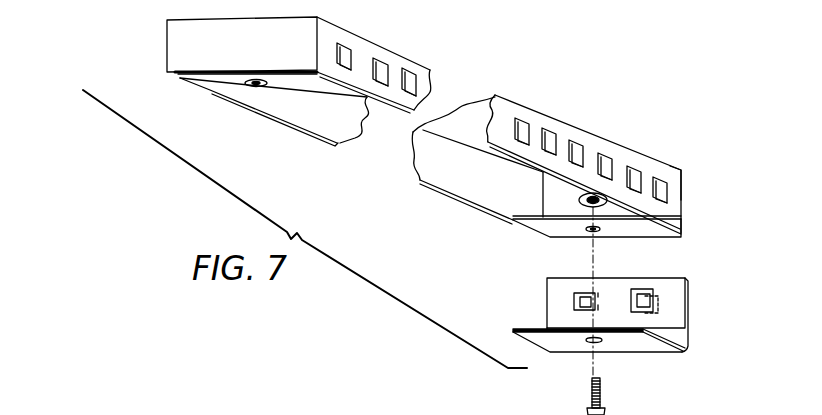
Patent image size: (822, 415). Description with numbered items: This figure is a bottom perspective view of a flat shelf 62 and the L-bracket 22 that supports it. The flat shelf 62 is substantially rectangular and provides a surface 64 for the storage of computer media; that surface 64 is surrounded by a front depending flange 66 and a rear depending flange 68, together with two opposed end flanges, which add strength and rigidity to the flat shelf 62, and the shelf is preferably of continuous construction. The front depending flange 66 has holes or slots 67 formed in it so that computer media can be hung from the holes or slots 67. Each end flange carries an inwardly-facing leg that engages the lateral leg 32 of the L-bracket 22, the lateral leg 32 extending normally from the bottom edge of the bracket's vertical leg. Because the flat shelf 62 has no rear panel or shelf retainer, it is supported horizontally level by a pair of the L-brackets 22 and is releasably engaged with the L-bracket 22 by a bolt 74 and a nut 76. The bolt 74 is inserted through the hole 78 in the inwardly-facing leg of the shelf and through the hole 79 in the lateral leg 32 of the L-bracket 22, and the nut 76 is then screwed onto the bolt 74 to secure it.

The L-bracket 22 is at (676, 308).
The lateral leg 32 is at (643, 343).
The flat shelf 62 is at (150, 70).
The surface 64 is at (466, 102).
The front depending flange 66 is at (677, 187).
The holes or slots 67 is at (663, 182).
The rear depending flange 68 is at (436, 168).
The bolt 74 is at (607, 392).
The nut 76 is at (607, 205).
The hole 78 is at (587, 229).
The hole 79 is at (597, 342).